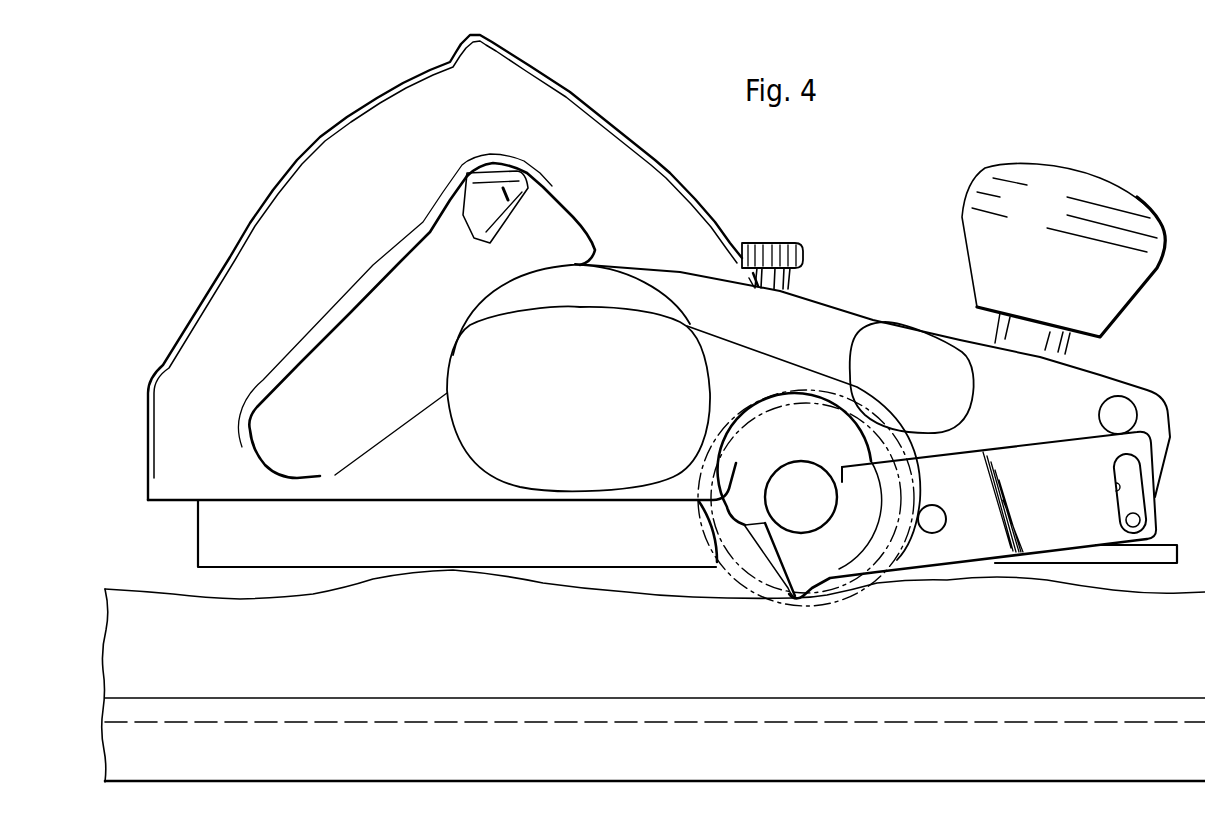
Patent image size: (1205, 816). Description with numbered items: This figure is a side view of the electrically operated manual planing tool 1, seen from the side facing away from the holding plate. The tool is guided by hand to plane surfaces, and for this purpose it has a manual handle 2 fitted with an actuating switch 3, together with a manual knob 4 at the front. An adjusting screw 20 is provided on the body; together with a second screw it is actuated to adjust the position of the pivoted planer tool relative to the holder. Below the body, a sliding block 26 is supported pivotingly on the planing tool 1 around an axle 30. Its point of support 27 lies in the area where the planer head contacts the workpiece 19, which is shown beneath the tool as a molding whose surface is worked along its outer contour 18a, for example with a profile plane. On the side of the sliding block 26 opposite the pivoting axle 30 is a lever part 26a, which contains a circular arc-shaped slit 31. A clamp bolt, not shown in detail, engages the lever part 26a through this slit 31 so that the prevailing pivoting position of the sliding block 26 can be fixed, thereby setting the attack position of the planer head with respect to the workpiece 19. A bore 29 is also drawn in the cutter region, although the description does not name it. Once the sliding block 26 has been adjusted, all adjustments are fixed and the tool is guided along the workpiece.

The manual planing tool 1 is at (813, 303).
The manual handle 2 is at (394, 112).
The actuating switch 3 is at (480, 231).
The manual knob 4 is at (980, 183).
The outer contour 18a is at (182, 598).
The workpiece 19 is at (133, 646).
The adjusting screw 20 is at (769, 247).
The sliding block 26 is at (768, 550).
The lever part 26a is at (1047, 457).
The point of support 27 is at (800, 602).
The shaft bore 29 is at (784, 486).
The axle 30 is at (935, 512).
The circular arc-shaped slit 31 is at (1116, 491).